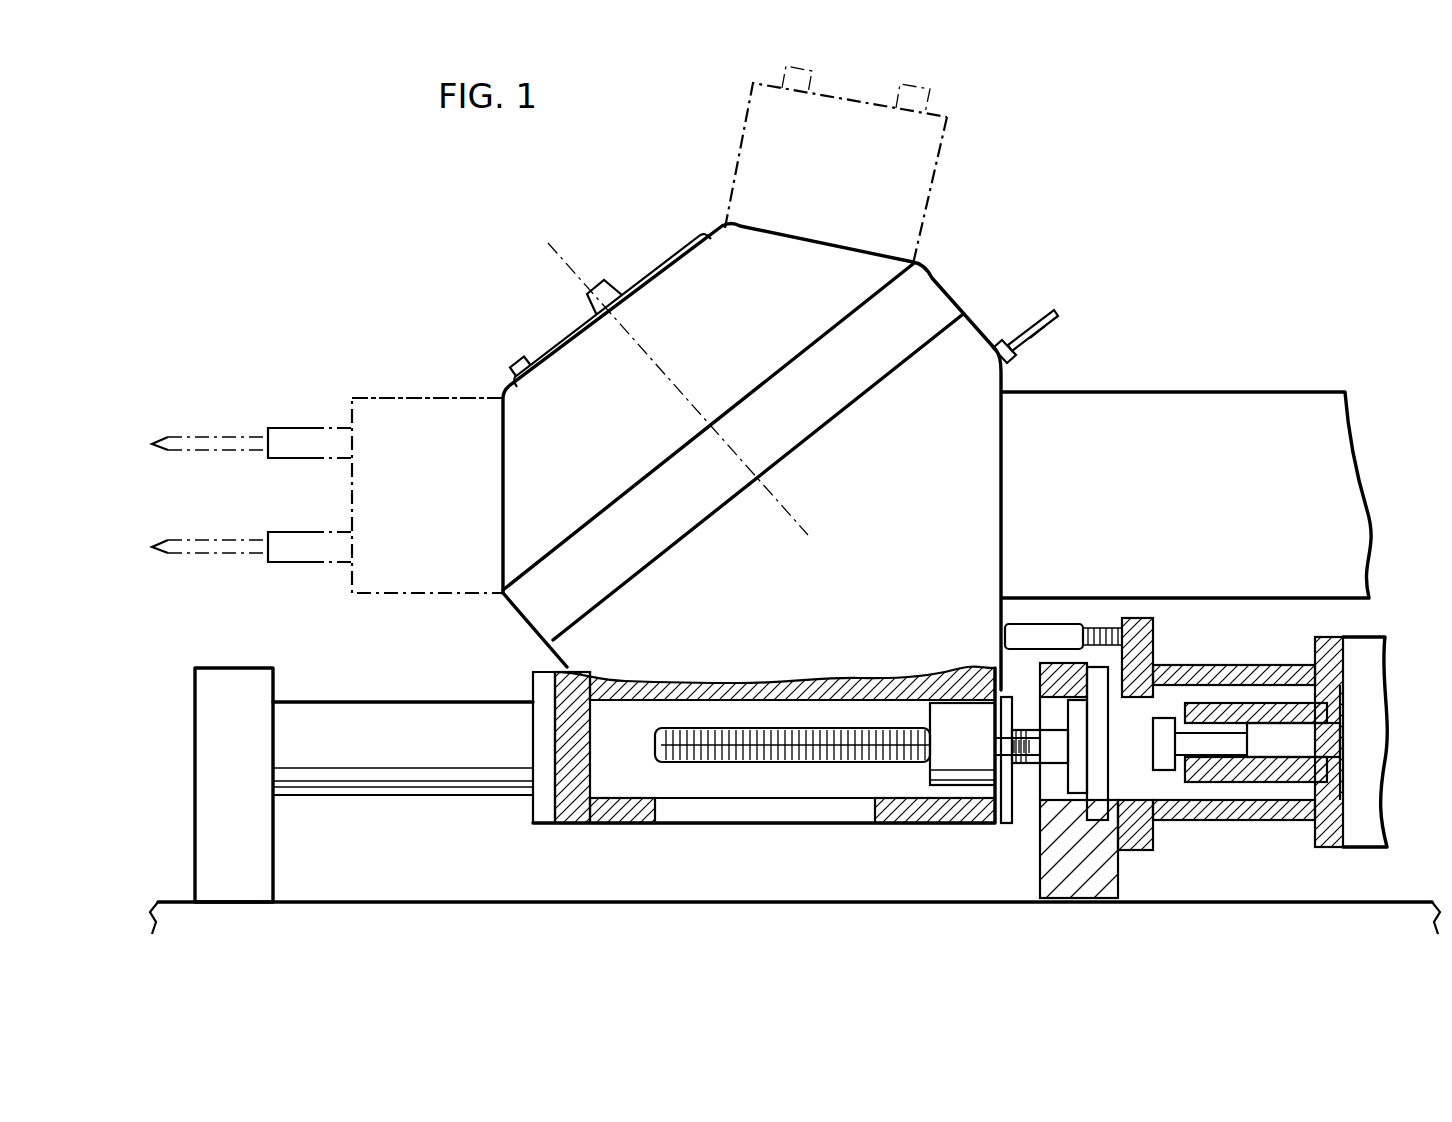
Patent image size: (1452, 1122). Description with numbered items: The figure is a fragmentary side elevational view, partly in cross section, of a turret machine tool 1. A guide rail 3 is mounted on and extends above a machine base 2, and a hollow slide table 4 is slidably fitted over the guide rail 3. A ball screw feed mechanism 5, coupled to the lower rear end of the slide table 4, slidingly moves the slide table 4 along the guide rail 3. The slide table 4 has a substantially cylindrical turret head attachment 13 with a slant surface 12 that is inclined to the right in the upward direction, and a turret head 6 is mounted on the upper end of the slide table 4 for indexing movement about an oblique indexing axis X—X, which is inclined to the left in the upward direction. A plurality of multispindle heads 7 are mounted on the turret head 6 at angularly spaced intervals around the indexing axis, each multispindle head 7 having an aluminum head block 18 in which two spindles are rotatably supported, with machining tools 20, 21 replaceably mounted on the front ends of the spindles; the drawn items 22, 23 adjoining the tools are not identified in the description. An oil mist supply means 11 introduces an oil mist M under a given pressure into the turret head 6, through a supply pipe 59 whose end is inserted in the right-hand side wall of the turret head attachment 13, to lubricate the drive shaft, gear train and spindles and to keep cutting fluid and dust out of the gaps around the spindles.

The turret machine tool 1 is at (462, 268).
The machine base 2 is at (410, 920).
The guide rail 3 is at (324, 697).
The slide table 4 is at (616, 812).
The ball screw feed mechanism 5 is at (1210, 824).
The turret head 6 is at (934, 261).
The multispindle head 7 is at (957, 135).
The oil mist supply means 11 is at (1010, 322).
The slant surface 12 is at (560, 608).
The turret head attachment 13 is at (565, 650).
The head block 18 is at (935, 187).
The machining tool 20 is at (190, 438).
The machining tool 21 is at (188, 556).
The sleeve 22 is at (283, 428).
The sleeve 23 is at (284, 564).
The supply pipe 59 is at (1034, 333).
The oil mist M is at (1064, 307).